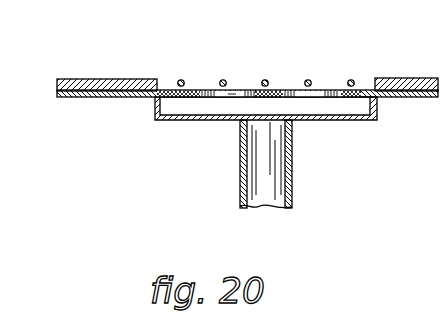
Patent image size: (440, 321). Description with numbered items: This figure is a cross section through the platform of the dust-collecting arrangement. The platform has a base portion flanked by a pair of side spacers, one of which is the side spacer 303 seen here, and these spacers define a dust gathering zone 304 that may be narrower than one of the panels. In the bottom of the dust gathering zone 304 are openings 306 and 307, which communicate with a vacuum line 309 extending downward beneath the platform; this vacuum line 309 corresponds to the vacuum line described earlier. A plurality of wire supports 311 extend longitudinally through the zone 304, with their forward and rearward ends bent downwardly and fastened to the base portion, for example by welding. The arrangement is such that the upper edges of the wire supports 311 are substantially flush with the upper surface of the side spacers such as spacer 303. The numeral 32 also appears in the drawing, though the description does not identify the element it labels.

The side spacer 303 is at (77, 79).
The dust gathering zone 304 is at (358, 92).
The opening 306 is at (210, 92).
The opening 307 is at (317, 92).
The wire support 311 is at (226, 82).
The channel member 32 is at (176, 121).
The vacuum line 309 is at (270, 192).